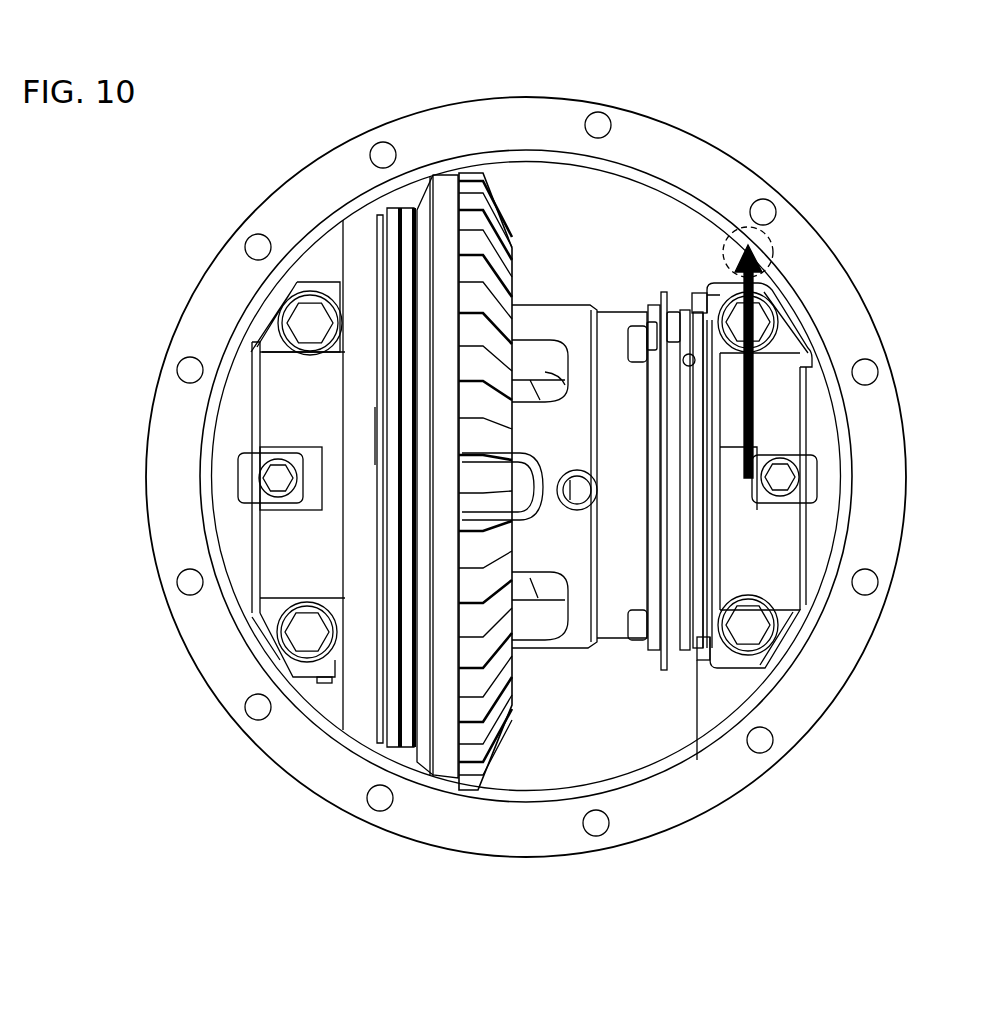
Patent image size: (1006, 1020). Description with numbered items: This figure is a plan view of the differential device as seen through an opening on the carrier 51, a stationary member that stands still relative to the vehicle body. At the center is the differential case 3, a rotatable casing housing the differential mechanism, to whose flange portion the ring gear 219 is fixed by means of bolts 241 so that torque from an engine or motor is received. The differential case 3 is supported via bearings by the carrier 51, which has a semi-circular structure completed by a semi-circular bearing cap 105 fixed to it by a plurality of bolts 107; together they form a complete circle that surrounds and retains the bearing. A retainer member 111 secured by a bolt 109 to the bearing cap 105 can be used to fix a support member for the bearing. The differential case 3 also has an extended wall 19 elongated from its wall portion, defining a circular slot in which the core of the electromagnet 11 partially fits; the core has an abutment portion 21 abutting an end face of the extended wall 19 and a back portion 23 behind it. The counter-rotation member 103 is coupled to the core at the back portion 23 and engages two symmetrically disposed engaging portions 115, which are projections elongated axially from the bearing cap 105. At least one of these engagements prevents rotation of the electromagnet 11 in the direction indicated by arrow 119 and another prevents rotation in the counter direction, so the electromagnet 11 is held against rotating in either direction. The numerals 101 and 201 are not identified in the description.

The differential case 3 is at (551, 305).
The electromagnet 11 is at (678, 310).
The extended wall 19 is at (670, 600).
The abutment portion 21 is at (685, 550).
The back portion 23 is at (695, 487).
The carrier 51 is at (852, 675).
The support unit 101 is at (525, 472).
The counter-rotation member 103 is at (697, 300).
The bearing cap 105 is at (260, 542).
The bolt 107 is at (310, 312).
The bolt 109 is at (278, 472).
The retainer member 111 is at (245, 479).
The engaging portion 115 is at (700, 662).
The arrow 119 is at (805, 381).
The clutch unit 201 is at (388, 419).
The ring gear 219 is at (473, 185).
The bolt 241 is at (360, 235).